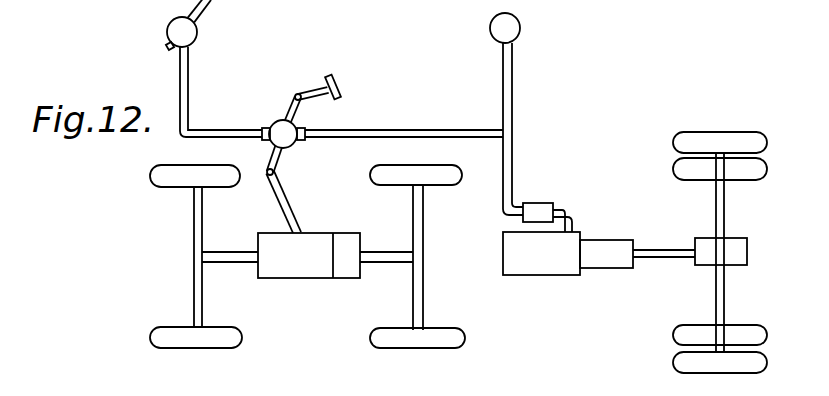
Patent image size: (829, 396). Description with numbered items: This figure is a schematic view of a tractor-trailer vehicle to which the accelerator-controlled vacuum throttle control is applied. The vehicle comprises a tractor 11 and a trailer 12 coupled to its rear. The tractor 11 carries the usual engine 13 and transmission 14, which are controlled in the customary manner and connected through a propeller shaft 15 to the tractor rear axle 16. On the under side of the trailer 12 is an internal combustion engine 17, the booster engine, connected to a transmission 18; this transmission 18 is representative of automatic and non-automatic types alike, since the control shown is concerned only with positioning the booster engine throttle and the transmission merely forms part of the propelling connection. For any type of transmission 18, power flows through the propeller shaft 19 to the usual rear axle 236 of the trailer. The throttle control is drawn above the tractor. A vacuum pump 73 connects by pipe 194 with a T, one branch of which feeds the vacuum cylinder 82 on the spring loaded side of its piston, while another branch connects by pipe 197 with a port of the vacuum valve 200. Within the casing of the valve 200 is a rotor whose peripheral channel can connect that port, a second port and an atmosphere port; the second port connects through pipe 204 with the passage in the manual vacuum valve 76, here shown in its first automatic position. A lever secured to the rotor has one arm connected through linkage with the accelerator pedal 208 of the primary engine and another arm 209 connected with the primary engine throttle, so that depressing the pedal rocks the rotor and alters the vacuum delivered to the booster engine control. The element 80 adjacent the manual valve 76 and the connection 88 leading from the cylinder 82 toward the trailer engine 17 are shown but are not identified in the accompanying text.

The tractor 11 is at (312, 303).
The trailer 12 is at (565, 287).
The engine 13 is at (289, 279).
The transmission 14 is at (348, 279).
The propeller shaft 15 is at (387, 263).
The tractor rear axle 16 is at (425, 314).
The internal combustion engine 17 is at (525, 277).
The automatic transmission 18 is at (606, 269).
The propeller shaft 19 is at (657, 258).
The vacuum pump 73 is at (521, 29).
The vacuum valve 76 is at (198, 44).
The steering lever 80 is at (203, 9).
The vacuum cylinder 82 is at (540, 202).
The control linkage 88 is at (573, 215).
The pipe 194 is at (512, 82).
The pipe 197 is at (418, 130).
The vacuum valve 200 is at (296, 143).
The pipe 204 is at (181, 65).
The accelerator pedal 208 is at (338, 78).
The arm 209 is at (276, 173).
The rear axle 236 is at (725, 288).